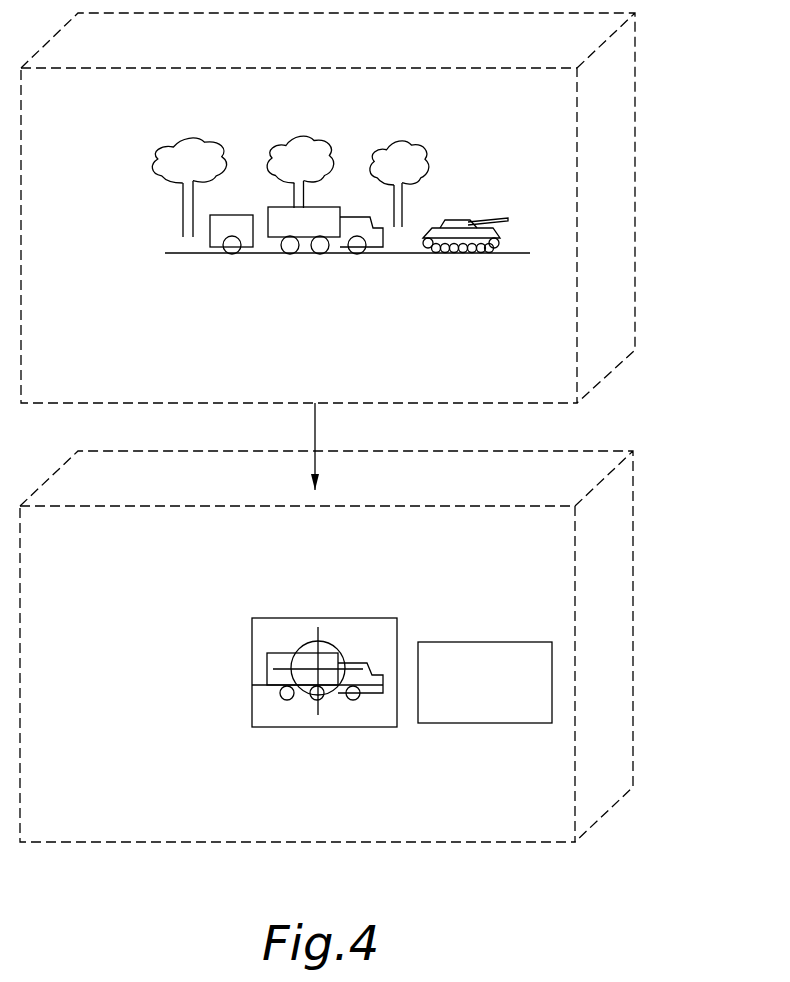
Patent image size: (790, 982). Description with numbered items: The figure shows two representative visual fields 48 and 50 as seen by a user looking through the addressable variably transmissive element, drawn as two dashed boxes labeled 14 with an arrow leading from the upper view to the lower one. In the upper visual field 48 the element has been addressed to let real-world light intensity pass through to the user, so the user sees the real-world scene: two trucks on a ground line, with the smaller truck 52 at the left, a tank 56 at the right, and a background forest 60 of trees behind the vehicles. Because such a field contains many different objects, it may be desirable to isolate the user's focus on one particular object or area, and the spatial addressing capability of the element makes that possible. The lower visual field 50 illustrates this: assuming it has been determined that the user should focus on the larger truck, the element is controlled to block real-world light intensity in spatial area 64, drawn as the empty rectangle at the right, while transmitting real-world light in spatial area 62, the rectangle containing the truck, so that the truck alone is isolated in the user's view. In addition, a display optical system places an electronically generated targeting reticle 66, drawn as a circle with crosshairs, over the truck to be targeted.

The display 14 is at (637, 150).
The visual field 48 is at (294, 219).
The visual field 50 is at (347, 699).
The truck 52 is at (245, 253).
The tank 56 is at (463, 238).
The background forest 60 is at (442, 197).
The spatial area 62 is at (324, 680).
The spatial area 64 is at (402, 760).
The targeting reticle 66 is at (303, 642).